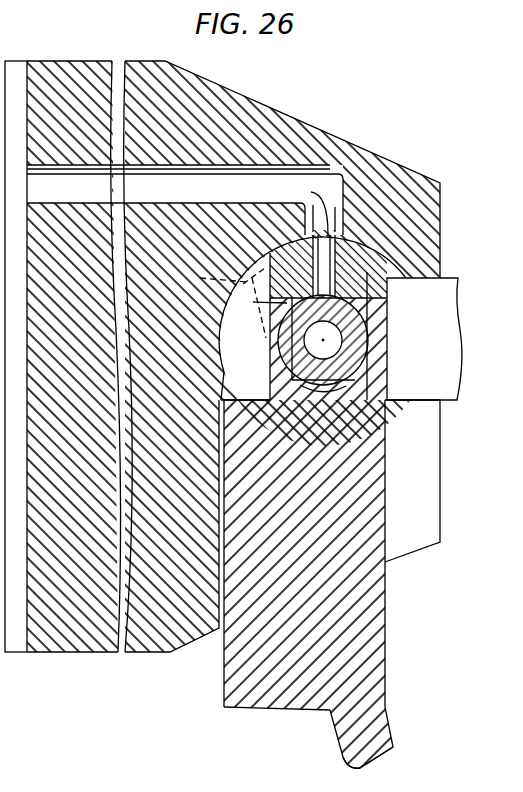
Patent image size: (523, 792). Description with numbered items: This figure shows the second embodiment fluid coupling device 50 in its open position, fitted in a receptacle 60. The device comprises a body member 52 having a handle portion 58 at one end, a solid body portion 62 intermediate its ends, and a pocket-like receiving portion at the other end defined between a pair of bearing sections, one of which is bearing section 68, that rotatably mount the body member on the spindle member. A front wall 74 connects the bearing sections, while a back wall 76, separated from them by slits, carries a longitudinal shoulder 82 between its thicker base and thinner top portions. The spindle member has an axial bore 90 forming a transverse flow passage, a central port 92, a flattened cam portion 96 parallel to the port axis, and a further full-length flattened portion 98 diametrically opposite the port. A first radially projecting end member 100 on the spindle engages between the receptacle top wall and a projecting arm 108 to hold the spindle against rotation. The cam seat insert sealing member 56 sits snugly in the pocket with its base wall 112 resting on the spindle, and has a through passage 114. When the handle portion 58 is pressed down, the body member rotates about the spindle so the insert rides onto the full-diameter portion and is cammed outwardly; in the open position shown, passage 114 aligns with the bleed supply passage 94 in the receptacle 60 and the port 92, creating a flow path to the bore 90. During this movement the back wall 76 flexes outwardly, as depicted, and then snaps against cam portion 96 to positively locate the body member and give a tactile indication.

The fluid coupling device 50 is at (392, 604).
The body member 52 is at (290, 713).
The cam seat insert sealing member 56 is at (352, 245).
The handle portion 58 is at (372, 745).
The receptacle 60 is at (262, 102).
The solid body portion 62 is at (236, 673).
The bearing section 68 is at (255, 372).
The front wall 74 is at (388, 303).
The back wall 76 is at (218, 300).
The longitudinal shoulder 82 is at (262, 306).
The axial bore 90 is at (368, 368).
The central opening or port 92 is at (345, 344).
The bleed supply passage 94 is at (328, 190).
The flattened cam portion 96 is at (297, 382).
The full-length flattened portion 98 is at (335, 385).
The first radially projecting end member 100 is at (447, 383).
The projecting arm 108 is at (430, 442).
The base wall 112 is at (380, 272).
The through passage 114 is at (300, 207).